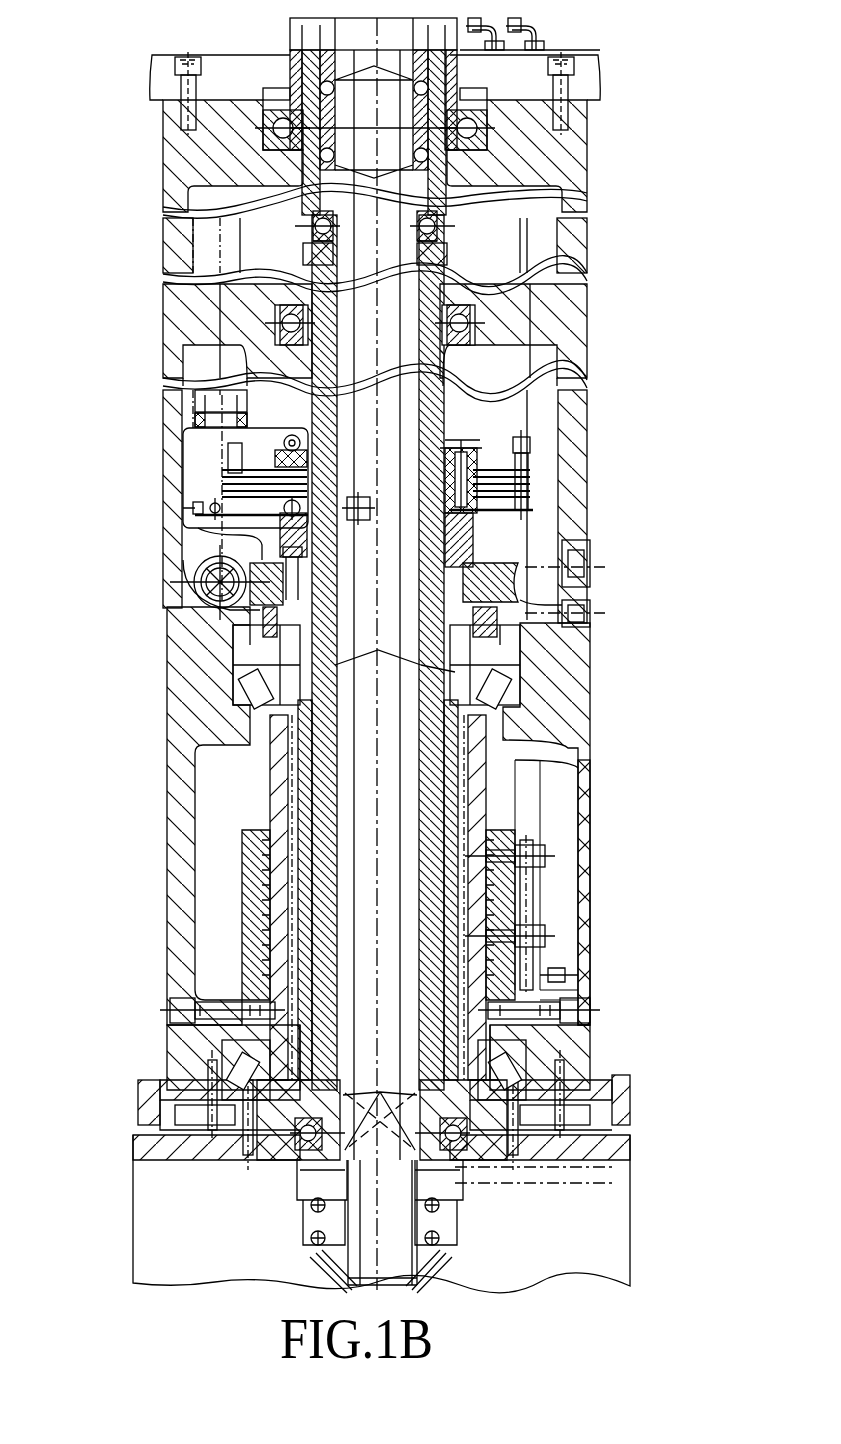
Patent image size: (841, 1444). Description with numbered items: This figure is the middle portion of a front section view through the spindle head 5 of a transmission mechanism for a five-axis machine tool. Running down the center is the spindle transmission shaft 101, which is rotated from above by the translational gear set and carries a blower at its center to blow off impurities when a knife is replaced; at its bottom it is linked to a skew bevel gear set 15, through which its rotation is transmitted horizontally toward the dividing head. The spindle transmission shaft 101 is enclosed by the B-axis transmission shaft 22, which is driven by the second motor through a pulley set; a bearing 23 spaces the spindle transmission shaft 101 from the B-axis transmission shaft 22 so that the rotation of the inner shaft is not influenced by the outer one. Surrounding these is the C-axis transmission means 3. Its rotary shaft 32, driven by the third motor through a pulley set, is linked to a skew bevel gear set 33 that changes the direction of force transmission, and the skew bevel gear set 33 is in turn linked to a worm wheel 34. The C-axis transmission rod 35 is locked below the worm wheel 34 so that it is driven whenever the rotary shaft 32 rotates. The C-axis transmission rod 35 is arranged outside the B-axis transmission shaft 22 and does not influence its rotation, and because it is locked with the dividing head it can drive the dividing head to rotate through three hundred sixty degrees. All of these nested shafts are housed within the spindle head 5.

The spindle head 5 is at (163, 161).
The rotary shaft 32 is at (240, 362).
The B-axis transmission shaft 22 is at (435, 438).
The spindle transmission shaft 101 is at (405, 556).
The bearing 23 is at (432, 228).
The skew bevel gear set 33 is at (235, 578).
The worm wheel 34 is at (200, 592).
The C-axis transmission rod 35 is at (475, 790).
The C-axis transmission means 3 is at (555, 1038).
The skew bevel gear set 15 is at (440, 1272).